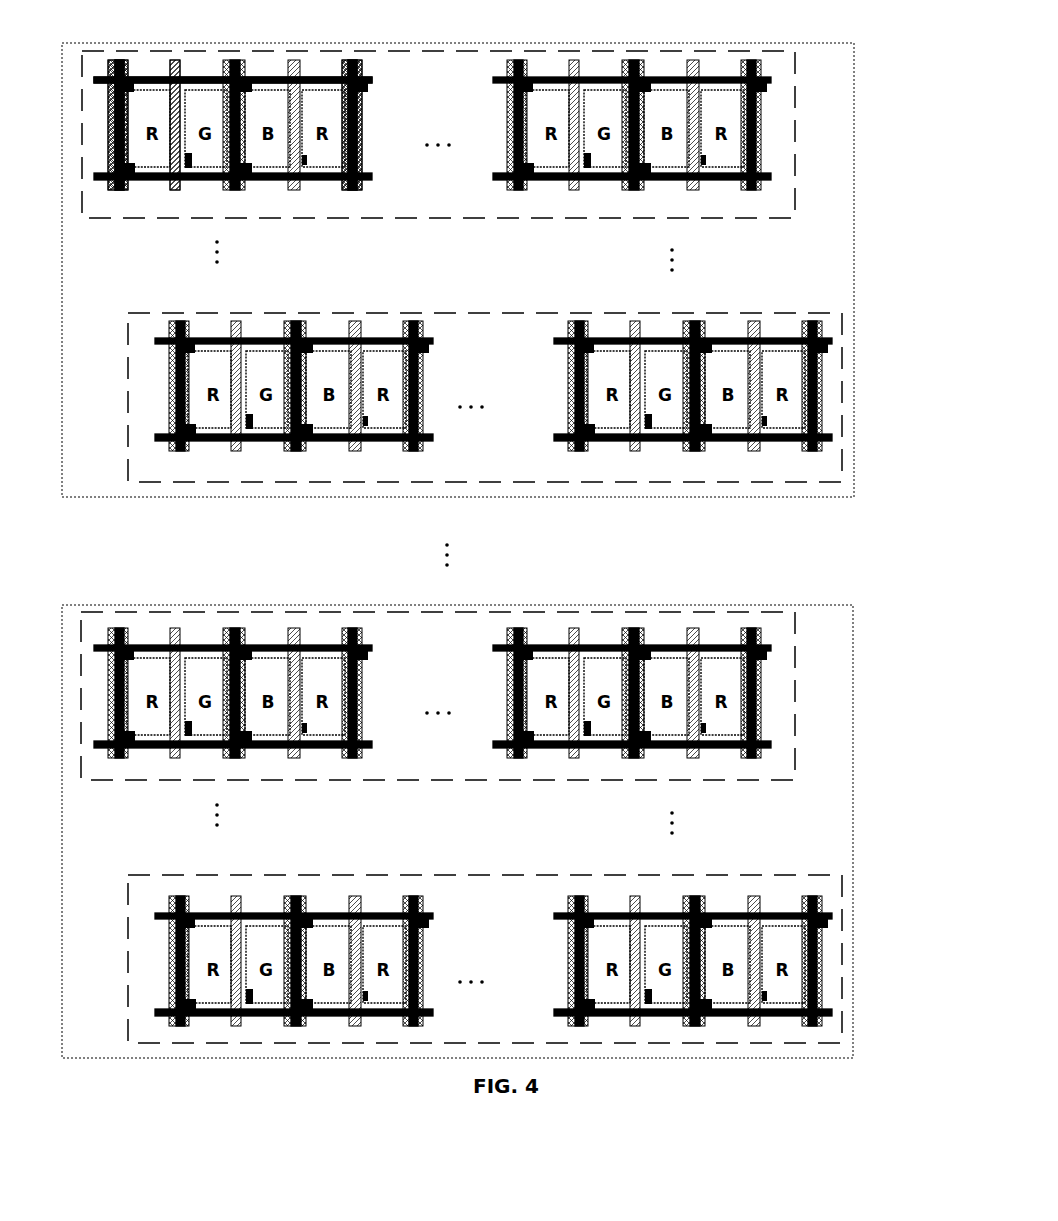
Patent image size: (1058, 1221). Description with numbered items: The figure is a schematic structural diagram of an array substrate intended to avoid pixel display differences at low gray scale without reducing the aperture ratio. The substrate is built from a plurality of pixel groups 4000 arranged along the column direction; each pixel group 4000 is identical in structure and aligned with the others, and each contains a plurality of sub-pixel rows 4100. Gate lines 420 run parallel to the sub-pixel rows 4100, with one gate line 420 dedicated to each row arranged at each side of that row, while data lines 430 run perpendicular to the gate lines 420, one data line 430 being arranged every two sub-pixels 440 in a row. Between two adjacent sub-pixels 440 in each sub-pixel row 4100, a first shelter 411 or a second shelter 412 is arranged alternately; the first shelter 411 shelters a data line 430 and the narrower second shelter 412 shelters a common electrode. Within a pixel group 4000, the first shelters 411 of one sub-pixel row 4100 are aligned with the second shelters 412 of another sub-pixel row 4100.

The first shelter 411 is at (128, 63).
The second shelter 412 is at (178, 63).
The gate line 420 is at (277, 76).
The data line 430 is at (362, 135).
The sub-pixel 440 is at (210, 178).
The pixel group 4000 is at (845, 80).
The sub-pixel row 4100 is at (772, 210).